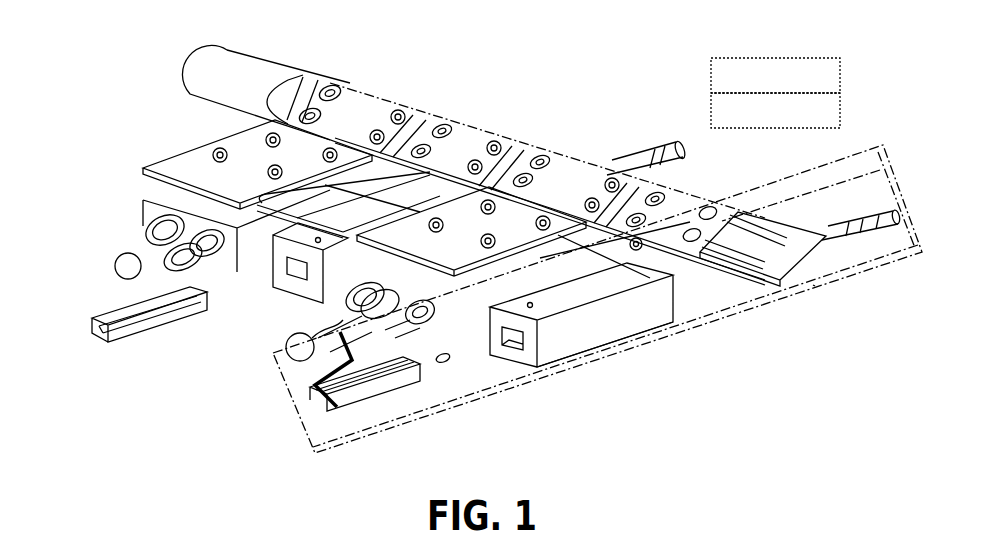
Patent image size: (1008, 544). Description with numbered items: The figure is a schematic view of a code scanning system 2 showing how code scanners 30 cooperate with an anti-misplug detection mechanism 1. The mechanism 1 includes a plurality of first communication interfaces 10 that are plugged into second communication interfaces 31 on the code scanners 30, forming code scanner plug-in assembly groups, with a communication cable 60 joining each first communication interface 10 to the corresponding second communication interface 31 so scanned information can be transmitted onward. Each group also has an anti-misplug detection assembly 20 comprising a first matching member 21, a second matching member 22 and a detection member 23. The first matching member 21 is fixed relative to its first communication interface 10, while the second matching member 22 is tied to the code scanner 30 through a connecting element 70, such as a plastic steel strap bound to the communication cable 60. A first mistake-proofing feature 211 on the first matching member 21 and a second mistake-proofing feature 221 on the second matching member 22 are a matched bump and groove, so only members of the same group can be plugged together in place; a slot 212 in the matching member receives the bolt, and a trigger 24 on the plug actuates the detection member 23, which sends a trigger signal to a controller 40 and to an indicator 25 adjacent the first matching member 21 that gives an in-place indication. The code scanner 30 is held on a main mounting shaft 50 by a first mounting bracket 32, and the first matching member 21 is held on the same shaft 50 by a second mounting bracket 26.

The anti-misplug detection mechanism 1 is at (826, 291).
The code scanning system 2 is at (518, 42).
The first communication interface 10 is at (113, 269).
The anti-misplug detection assembly 20 is at (884, 123).
The first matching member 21 is at (662, 308).
The first mistake-proofing feature 211 is at (513, 330).
The slot 212 is at (540, 352).
The second matching member 22 is at (130, 317).
The second mistake-proofing feature 221 is at (305, 398).
The detection member 23 is at (856, 213).
The trigger 24 is at (446, 360).
The indicator 25 is at (711, 77).
The second mounting bracket 26 is at (469, 150).
The code scanner 30 is at (145, 203).
The second communication interface 31 is at (160, 235).
The first mounting bracket 32 is at (349, 117).
The controller 40 is at (711, 110).
The main mounting shaft 50 is at (233, 89).
The communication cable 60 is at (357, 322).
The connecting element 70 is at (340, 385).